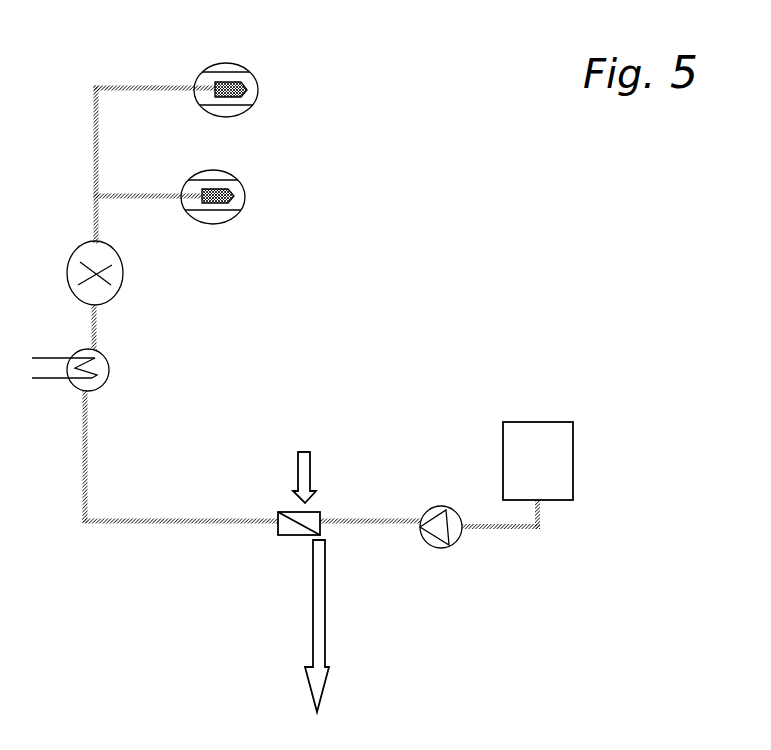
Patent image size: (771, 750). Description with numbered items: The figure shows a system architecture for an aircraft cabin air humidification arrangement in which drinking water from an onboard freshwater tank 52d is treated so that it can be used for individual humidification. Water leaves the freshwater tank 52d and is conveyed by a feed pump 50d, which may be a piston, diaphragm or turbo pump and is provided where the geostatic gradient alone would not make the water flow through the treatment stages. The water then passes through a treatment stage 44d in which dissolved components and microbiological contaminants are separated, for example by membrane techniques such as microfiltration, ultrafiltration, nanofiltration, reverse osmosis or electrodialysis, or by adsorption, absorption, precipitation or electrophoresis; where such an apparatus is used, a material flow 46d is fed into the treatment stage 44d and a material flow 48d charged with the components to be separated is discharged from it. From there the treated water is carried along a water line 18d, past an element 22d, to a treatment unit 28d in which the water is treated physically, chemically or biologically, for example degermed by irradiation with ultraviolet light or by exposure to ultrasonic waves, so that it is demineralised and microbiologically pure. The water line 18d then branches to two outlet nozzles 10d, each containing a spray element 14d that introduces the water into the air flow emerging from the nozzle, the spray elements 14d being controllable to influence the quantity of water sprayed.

The outlet nozzle 10d is at (232, 65).
The spray element 14d is at (245, 85).
The treatment unit 28d is at (123, 277).
The water line 18d is at (93, 353).
The heat exchanger coil 22d is at (102, 372).
The second treatment stage 44d is at (297, 540).
The material flow 46d is at (310, 450).
The material flow charged with separated components 48d is at (300, 653).
The feed pump 50d is at (442, 510).
The onboard freshwater tank 52d is at (522, 422).